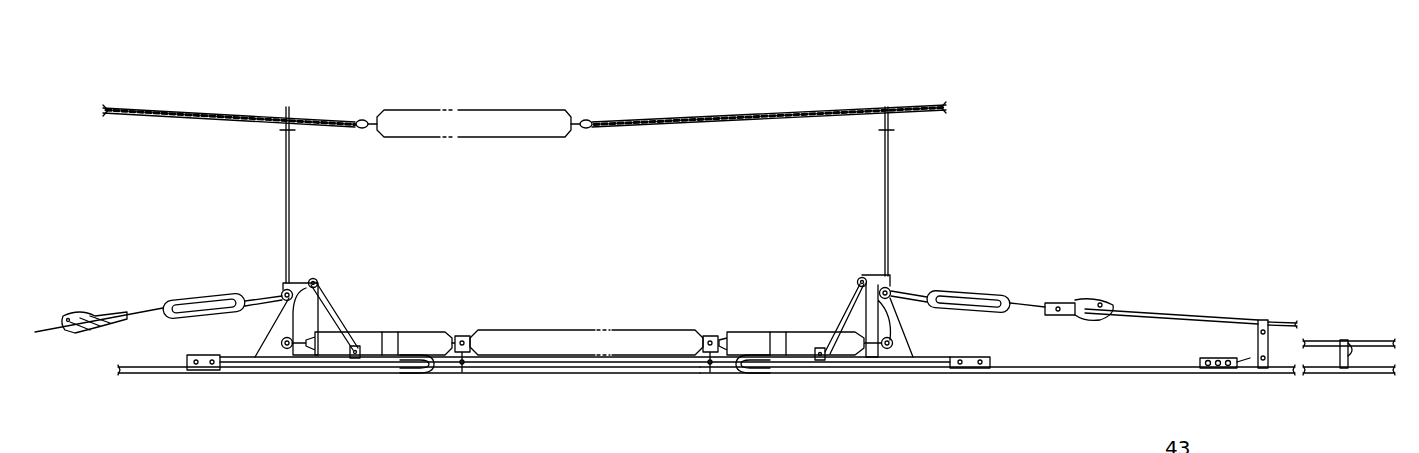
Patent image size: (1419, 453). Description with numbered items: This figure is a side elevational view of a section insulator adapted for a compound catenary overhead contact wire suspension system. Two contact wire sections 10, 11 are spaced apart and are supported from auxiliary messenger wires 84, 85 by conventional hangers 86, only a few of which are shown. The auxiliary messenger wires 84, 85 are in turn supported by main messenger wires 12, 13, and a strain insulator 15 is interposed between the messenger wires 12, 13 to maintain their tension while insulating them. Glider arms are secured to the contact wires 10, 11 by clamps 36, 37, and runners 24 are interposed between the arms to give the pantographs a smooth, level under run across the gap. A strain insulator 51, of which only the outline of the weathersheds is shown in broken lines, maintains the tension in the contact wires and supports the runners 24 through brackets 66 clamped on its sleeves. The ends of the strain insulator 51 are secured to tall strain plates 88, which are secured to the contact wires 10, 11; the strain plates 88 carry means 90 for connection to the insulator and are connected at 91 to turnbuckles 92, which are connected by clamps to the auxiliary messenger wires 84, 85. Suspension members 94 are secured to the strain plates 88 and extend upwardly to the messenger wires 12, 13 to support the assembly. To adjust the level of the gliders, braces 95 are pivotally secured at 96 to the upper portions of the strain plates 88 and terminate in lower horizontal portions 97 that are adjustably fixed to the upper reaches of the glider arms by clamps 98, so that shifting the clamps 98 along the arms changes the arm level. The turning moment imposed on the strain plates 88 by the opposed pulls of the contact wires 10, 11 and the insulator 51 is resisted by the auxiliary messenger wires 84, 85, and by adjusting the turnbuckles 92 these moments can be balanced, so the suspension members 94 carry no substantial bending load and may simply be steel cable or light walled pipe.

The contact wire section 10 is at (124, 372).
The contact wire section 11 is at (1076, 368).
The main messenger wire 12 is at (220, 118).
The main messenger wire 13 is at (737, 118).
The strain insulator 15 is at (504, 120).
The runners 24 is at (436, 370).
The clamp 36 is at (1228, 369).
The clamp 37 is at (196, 370).
The strain insulator 51 is at (567, 328).
The brackets 66 is at (466, 360).
The auxiliary messenger wire 84 is at (48, 326).
The auxiliary messenger wire 85 is at (1132, 313).
The hangers 86 is at (1258, 337).
The strain plates 88 is at (278, 318).
The means for connection 90 is at (318, 308).
The connection to turnbuckles 91 is at (282, 290).
The turnbuckles 92 is at (193, 300).
The suspension members 94 is at (291, 256).
The braces 95 is at (324, 326).
The pivot 96 is at (316, 280).
The lower horizontal portions 97 is at (392, 342).
The clamps 98 is at (362, 346).